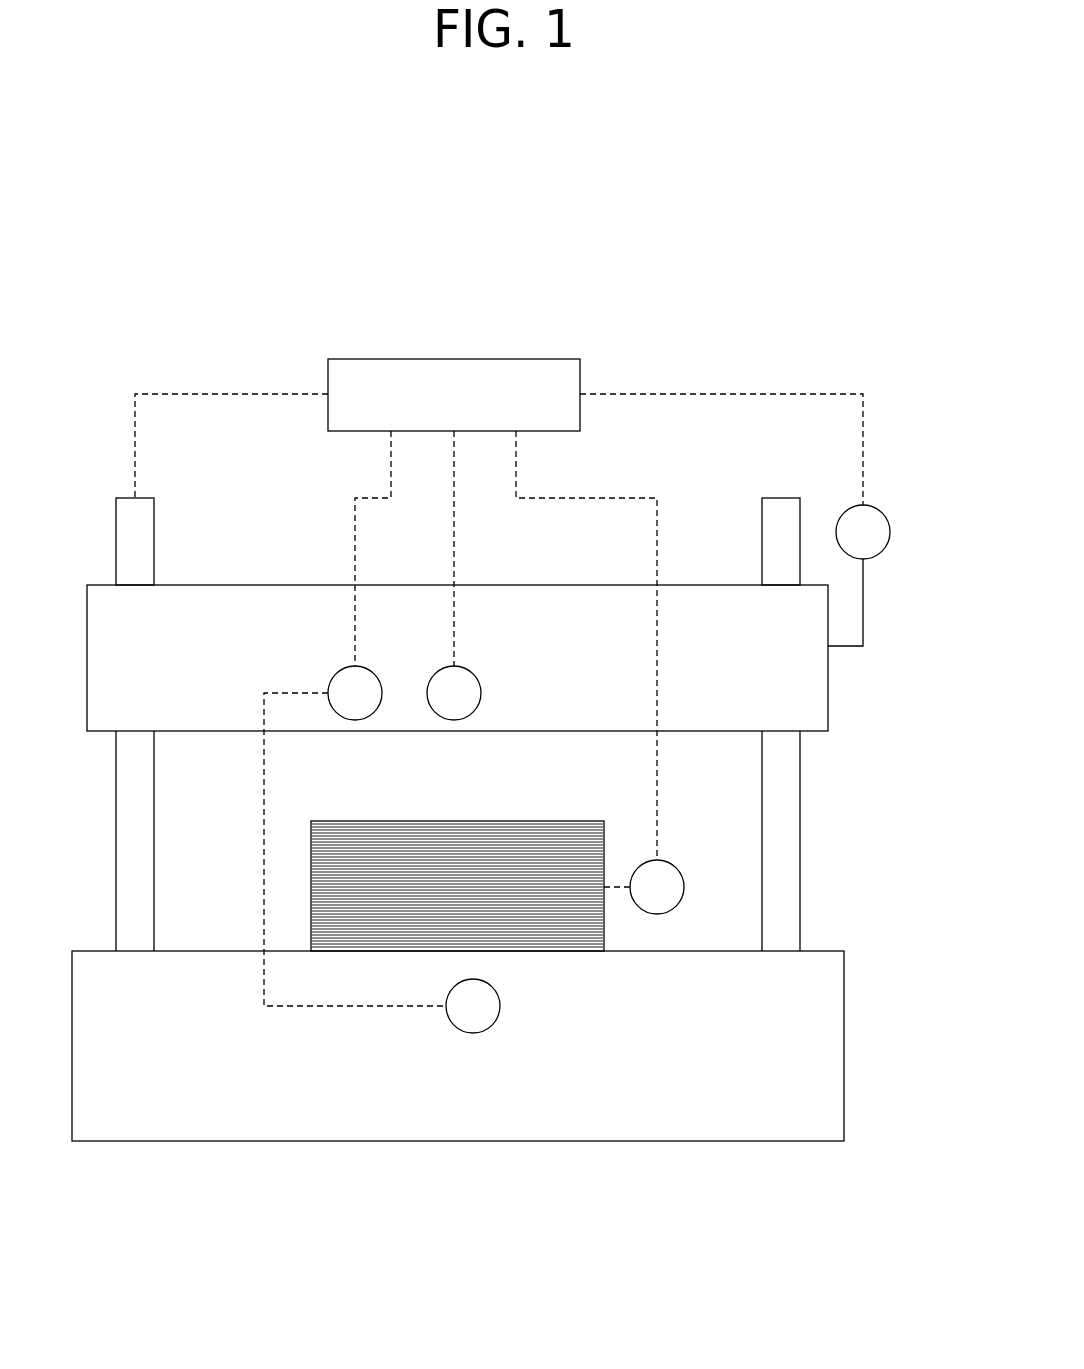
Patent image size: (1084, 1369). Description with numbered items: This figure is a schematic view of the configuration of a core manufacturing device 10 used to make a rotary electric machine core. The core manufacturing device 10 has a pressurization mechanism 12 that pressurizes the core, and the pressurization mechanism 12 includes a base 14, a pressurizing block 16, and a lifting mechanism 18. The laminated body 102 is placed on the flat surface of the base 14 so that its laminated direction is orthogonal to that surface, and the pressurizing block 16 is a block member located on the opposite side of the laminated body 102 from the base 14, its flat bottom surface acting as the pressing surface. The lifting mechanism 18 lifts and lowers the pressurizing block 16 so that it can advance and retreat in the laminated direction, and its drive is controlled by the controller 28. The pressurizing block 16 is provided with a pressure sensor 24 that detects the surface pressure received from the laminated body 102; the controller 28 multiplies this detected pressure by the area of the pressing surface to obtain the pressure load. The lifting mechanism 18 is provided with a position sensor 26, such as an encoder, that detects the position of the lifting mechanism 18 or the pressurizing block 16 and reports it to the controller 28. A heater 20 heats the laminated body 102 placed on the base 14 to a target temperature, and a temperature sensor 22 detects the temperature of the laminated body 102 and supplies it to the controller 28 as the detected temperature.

The core manufacturing device 10 is at (538, 263).
The pressurization mechanism 12 is at (832, 817).
The base 14 is at (317, 1141).
The pressurizing block 16 is at (218, 585).
The lifting mechanism 18 is at (116, 517).
The heater 20 is at (343, 667).
The temperature sensor 22 is at (684, 886).
The pressure sensor 24 is at (460, 720).
The position sensor 26 is at (890, 521).
The controller 28 is at (565, 358).
The laminated body 102 is at (542, 821).